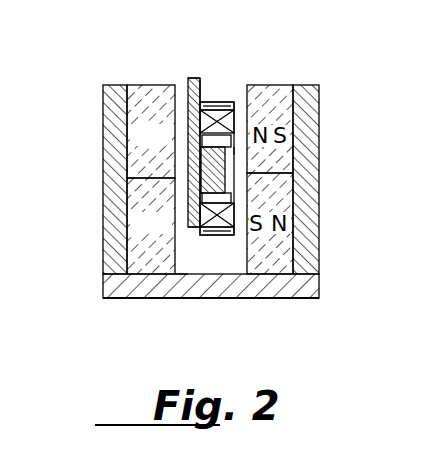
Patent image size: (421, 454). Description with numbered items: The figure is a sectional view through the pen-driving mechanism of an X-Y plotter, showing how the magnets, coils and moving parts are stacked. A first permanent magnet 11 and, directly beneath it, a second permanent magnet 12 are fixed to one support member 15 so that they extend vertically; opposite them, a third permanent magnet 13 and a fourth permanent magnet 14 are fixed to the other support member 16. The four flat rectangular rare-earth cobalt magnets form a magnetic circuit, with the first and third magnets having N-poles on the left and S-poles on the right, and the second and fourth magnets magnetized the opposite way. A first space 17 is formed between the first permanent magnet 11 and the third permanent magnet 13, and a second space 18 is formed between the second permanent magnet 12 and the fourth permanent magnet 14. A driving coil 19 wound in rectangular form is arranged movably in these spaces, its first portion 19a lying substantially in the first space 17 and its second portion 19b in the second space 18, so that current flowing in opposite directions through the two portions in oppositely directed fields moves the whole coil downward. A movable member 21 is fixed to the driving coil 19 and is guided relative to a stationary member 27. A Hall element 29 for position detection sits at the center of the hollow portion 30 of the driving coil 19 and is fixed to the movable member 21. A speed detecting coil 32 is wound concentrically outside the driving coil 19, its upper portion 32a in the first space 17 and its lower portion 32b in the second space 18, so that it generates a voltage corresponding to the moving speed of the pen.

The first permanent magnet 11 is at (228, 186).
The second permanent magnet 12 is at (288, 260).
The third permanent magnet 13 is at (140, 85).
The fourth permanent magnet 14 is at (127, 205).
The support member 15 is at (312, 86).
The support member 16 is at (103, 152).
The first space 17 is at (213, 101).
The second space 18 is at (190, 258).
The driving coil 19 is at (282, 177).
The first portion 19a is at (197, 78).
The second portion 19b is at (208, 232).
The movable member 21 is at (186, 84).
The stationary member 27 is at (118, 298).
The Hall element 29 is at (225, 172).
The hollow portion 30 is at (232, 151).
The speed detecting coil 32 is at (236, 177).
The upper portion 32a is at (220, 101).
The lower portion 32b is at (207, 237).